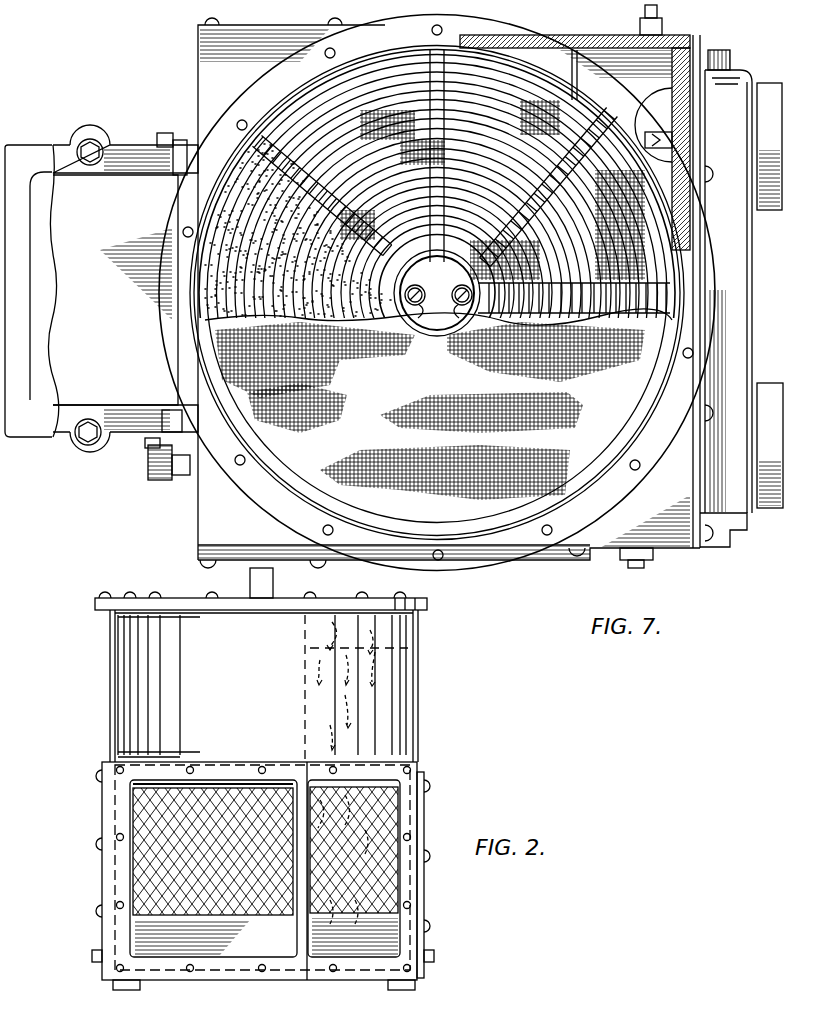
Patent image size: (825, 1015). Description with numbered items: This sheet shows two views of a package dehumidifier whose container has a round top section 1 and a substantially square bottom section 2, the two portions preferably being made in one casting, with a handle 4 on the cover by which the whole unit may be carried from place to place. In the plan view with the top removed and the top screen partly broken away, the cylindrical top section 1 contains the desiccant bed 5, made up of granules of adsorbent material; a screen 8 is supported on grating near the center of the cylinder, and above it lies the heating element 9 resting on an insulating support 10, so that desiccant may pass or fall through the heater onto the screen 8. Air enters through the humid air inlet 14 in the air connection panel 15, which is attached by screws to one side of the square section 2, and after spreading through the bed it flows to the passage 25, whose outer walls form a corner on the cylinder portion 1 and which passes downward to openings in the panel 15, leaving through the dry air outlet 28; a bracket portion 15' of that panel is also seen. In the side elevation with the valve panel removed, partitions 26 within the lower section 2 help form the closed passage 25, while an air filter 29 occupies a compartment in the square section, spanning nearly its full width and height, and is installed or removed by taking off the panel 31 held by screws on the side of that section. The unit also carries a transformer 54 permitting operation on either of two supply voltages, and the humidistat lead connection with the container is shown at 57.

In FIG. 7, the desiccant bed 5 is at (215, 272).
In FIG. 7, the screen 8 is at (367, 118).
In FIG. 7, the heating element 9 is at (520, 107).
In FIG. 7, the insulating support 10 is at (293, 143).
In FIG. 7, the humid air inlet 14 is at (772, 512).
In FIG. 7, the air connection panel 15 is at (743, 295).
In FIG. 7, the side plate bracket 15' is at (723, 553).
In FIG. 7, the passage 25 is at (616, 106).
In FIG. 7, the dry air outlet 28 is at (765, 85).
In FIG. 7, the transformer 54 is at (120, 361).
In FIG. 7, the lead connection 57 is at (152, 462).
In FIG. 2, the top section 1 is at (418, 703).
In FIG. 2, the bottom section 2 is at (172, 965).
In FIG. 2, the handle 4 is at (275, 582).
In FIG. 2, the partitions 26 is at (312, 940).
In FIG. 2, the air filter 29 is at (157, 864).
In FIG. 2, the panel 31 is at (102, 804).